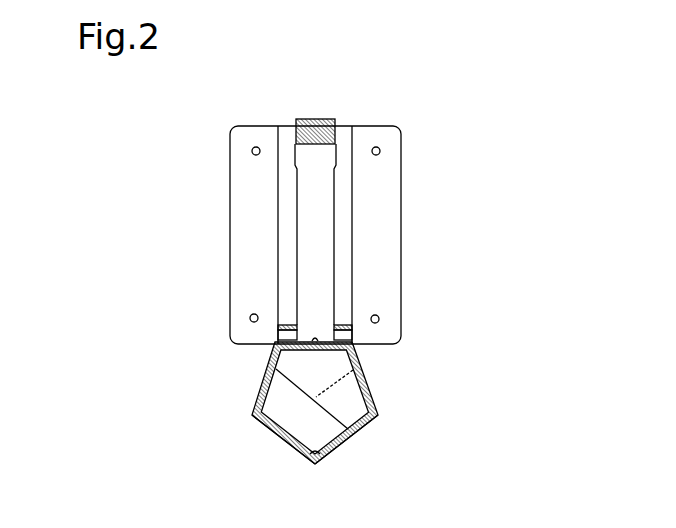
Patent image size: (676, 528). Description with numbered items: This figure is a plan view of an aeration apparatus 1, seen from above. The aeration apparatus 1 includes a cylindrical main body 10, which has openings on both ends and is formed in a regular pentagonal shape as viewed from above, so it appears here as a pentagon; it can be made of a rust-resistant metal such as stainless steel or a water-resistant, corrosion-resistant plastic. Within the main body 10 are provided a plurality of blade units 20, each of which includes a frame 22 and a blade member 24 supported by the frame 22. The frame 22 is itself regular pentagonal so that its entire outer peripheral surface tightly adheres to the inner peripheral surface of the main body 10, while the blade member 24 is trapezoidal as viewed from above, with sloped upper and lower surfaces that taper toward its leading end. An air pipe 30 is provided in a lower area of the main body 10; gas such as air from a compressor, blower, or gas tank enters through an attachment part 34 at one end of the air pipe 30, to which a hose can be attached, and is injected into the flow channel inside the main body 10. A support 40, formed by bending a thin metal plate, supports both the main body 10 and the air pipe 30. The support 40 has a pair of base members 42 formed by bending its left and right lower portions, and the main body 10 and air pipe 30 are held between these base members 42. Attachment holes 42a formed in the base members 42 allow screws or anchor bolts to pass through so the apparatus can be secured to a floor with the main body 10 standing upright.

The aeration apparatus 1 is at (472, 353).
The main body 10 is at (253, 417).
The blade unit 20 is at (353, 403).
The frame 22 is at (297, 458).
The blade member 24 is at (335, 432).
The air pipe 30 is at (318, 273).
The attachment part 34 is at (307, 122).
The support 40 is at (282, 248).
The base member 42 is at (242, 216).
The attachment hole 42a is at (246, 152).